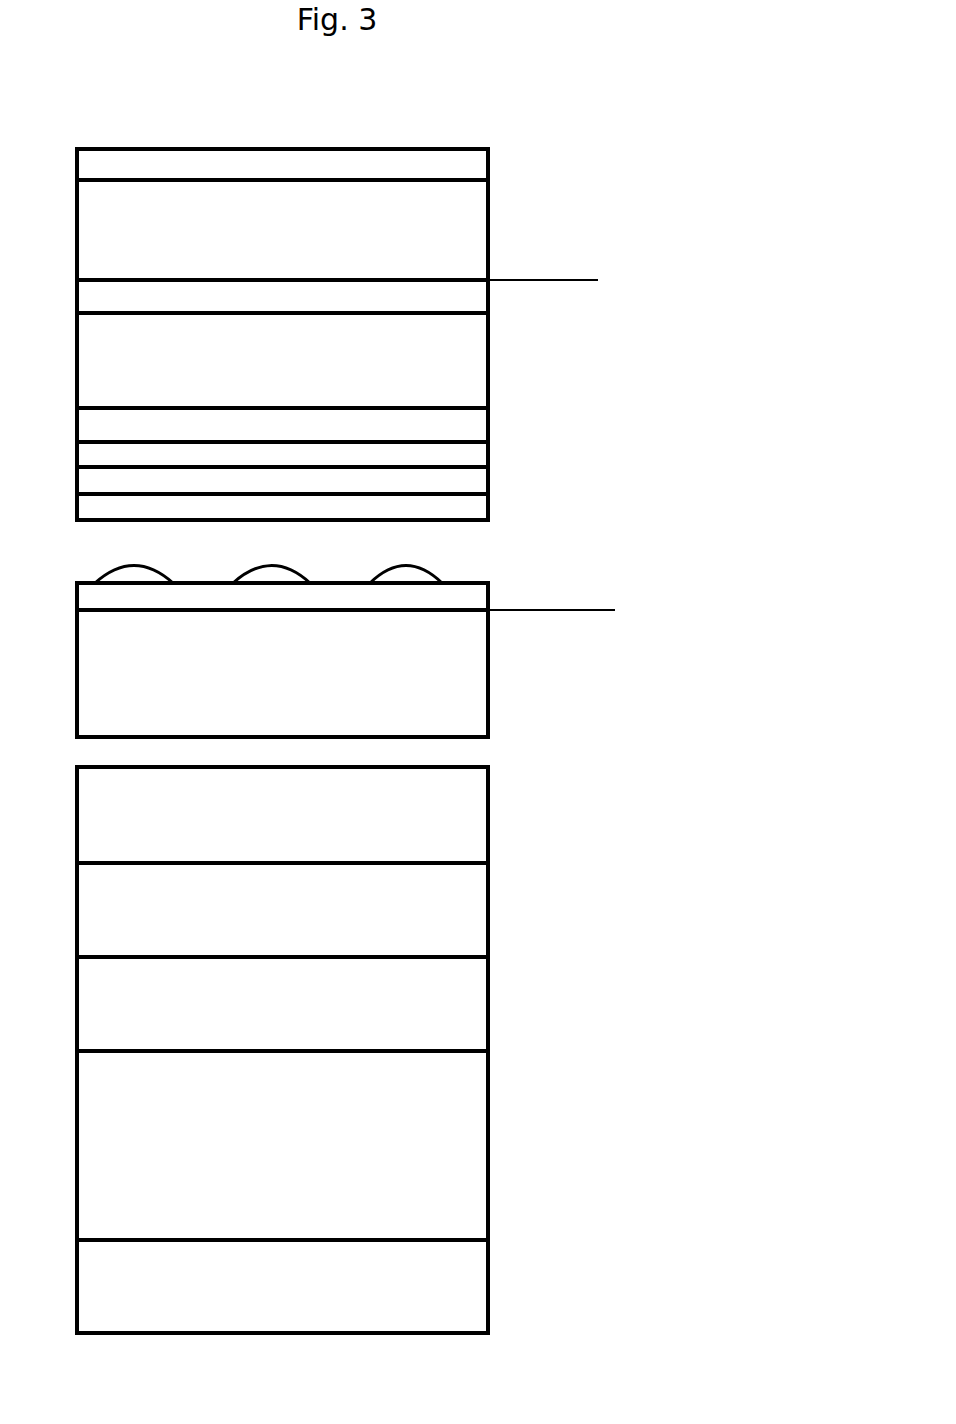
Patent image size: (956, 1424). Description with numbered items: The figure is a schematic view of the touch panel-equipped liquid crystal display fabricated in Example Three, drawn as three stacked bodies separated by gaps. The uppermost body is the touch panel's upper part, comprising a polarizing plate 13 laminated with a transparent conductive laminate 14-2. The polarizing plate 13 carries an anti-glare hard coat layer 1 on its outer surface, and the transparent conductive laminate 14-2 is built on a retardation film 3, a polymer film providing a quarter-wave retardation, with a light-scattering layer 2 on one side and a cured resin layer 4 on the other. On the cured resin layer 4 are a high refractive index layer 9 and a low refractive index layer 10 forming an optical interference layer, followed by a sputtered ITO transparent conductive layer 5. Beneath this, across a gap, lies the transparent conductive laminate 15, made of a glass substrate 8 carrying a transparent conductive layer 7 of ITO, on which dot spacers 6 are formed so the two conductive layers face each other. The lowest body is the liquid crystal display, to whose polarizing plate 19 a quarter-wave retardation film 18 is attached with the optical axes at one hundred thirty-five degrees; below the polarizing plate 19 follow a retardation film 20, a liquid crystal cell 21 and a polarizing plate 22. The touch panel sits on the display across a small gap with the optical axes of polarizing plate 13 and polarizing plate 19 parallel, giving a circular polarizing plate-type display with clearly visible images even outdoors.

The anti-glare hard coat layer 1 is at (467, 168).
The light-scattering layer 2 is at (456, 294).
The retardation film 3 is at (457, 362).
The cured resin layer 4 is at (462, 427).
The high refractive index layer 9 is at (463, 455).
The low refractive index layer 10 is at (463, 485).
The transparent conductive layer 5 is at (469, 504).
The dot spacer 6 is at (442, 573).
The transparent conductive layer 7 is at (462, 595).
The glass substrate 8 is at (468, 651).
The polarizing plate 13 is at (685, 155).
The transparent conductive laminate 14-2 is at (685, 288).
The transparent conductive laminate 15 is at (692, 583).
The retardation film 18 is at (461, 811).
The polarizing plate 19 is at (457, 907).
The retardation film 20 is at (468, 999).
The liquid crystal cell 21 is at (459, 1130).
The polarizing plate 22 is at (457, 1284).